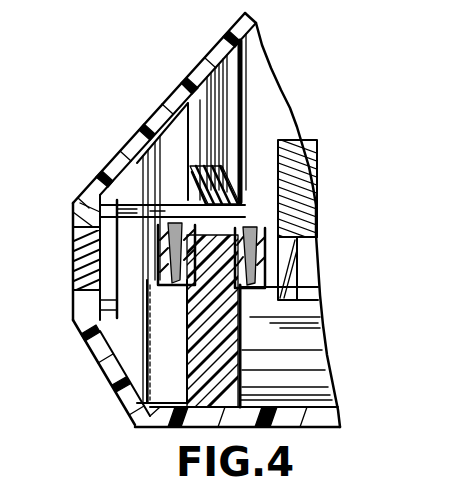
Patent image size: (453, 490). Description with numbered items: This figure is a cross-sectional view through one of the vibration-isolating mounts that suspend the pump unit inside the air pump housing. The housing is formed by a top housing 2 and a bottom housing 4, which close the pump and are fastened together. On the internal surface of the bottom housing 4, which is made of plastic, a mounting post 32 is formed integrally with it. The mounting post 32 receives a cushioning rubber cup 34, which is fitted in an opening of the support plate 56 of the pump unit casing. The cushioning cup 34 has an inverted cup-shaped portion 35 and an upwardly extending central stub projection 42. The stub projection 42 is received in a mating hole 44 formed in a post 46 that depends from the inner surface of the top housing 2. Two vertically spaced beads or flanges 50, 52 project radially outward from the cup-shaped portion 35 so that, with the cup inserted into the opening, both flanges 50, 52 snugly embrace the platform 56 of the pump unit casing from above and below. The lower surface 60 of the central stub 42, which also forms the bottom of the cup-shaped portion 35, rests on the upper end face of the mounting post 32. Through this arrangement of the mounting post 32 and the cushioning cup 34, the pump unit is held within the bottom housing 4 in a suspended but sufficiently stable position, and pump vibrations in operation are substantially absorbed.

The top housing 2 is at (205, 52).
The bottom housing 4 is at (110, 393).
The mounting post 32 is at (232, 364).
The cushioning rubber cup 34 is at (135, 327).
The inverted cup-shaped portion 35 is at (166, 341).
The central stub projection 42 is at (200, 180).
The mating hole 44 is at (215, 198).
The post 46 is at (243, 117).
The flange 50 is at (115, 205).
The flange 52 is at (125, 282).
The support plate 56 is at (318, 250).
The lower surface 60 is at (249, 227).